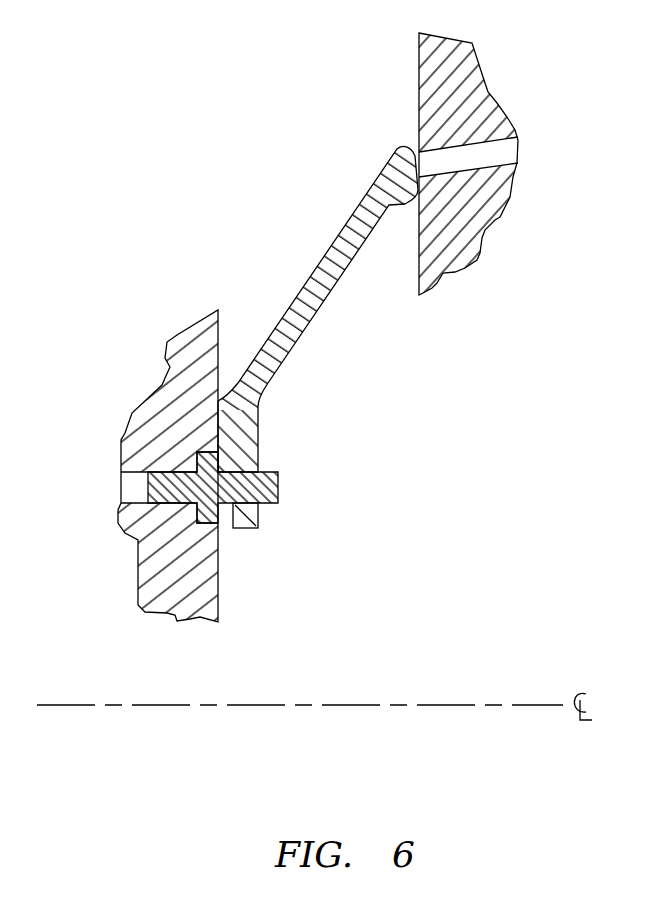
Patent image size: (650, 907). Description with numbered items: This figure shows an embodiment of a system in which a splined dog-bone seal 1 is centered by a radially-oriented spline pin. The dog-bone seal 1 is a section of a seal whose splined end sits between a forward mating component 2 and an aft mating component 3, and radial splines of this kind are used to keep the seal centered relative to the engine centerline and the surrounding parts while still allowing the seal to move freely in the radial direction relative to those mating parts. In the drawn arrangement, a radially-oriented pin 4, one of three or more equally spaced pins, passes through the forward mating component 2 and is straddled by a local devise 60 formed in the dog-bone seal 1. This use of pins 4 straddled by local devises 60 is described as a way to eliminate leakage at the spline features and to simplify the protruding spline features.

The dog-bone seal 1 is at (318, 309).
The forward mating component 2 is at (150, 393).
The aft mating component 3 is at (490, 79).
The radially-oriented pin 4 is at (279, 507).
The local devise 60 is at (264, 459).